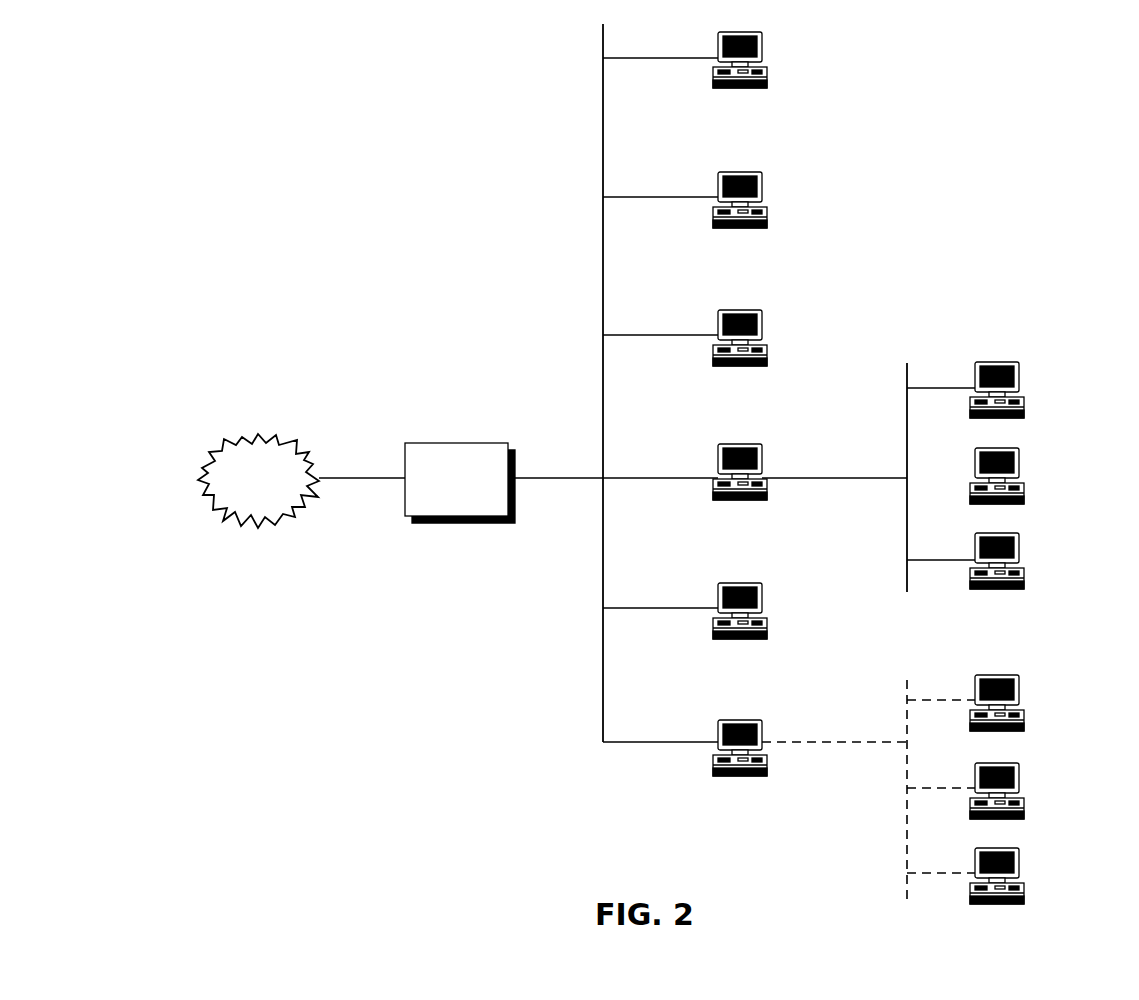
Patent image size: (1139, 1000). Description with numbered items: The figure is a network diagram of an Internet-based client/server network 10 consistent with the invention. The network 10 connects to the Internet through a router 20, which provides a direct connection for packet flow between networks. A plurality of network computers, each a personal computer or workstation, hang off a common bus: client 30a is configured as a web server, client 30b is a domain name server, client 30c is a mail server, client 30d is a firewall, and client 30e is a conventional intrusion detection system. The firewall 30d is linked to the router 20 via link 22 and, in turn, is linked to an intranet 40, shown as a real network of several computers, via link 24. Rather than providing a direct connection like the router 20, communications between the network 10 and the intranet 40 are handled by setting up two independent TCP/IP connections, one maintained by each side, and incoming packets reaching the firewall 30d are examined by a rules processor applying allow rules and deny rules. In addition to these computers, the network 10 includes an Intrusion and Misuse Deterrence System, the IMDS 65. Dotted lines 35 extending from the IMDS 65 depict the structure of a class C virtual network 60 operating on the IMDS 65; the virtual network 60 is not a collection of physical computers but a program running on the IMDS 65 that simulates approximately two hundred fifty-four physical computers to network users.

The network 10 is at (335, 787).
The router 20 is at (482, 443).
The link 22 is at (604, 428).
The link 24 is at (877, 476).
The client 30a is at (763, 37).
The client 30b is at (763, 176).
The client 30c is at (763, 314).
The firewall 30d is at (763, 452).
The client 30e is at (763, 588).
The dotted lines 35 is at (861, 740).
The intranet 40 is at (1028, 362).
The virtual network 60 is at (1025, 672).
The Intrusion and Misuse Deterrence System (IMDS) 65 is at (763, 725).